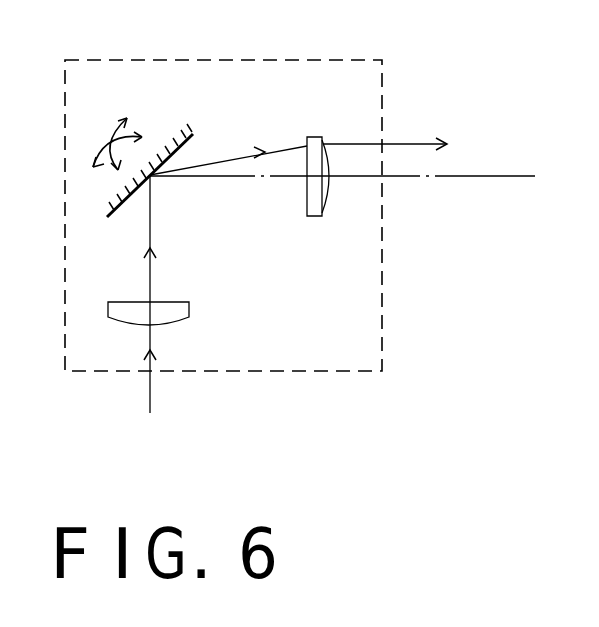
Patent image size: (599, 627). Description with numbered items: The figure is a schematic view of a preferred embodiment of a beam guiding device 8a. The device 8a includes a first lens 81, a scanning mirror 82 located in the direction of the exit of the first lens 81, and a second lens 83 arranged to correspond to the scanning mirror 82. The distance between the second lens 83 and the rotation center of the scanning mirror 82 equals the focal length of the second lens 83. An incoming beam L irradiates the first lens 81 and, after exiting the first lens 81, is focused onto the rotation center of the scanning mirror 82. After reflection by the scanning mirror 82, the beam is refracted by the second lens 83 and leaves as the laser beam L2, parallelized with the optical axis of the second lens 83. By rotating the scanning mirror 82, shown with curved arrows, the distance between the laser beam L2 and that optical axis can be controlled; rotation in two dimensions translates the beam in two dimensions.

The beam guiding device 8a is at (185, 58).
The first lens 81 is at (189, 304).
The scanning mirror 82 is at (193, 134).
The second lens 83 is at (323, 137).
The incident light beam L is at (151, 316).
The laser beam L2 is at (395, 124).